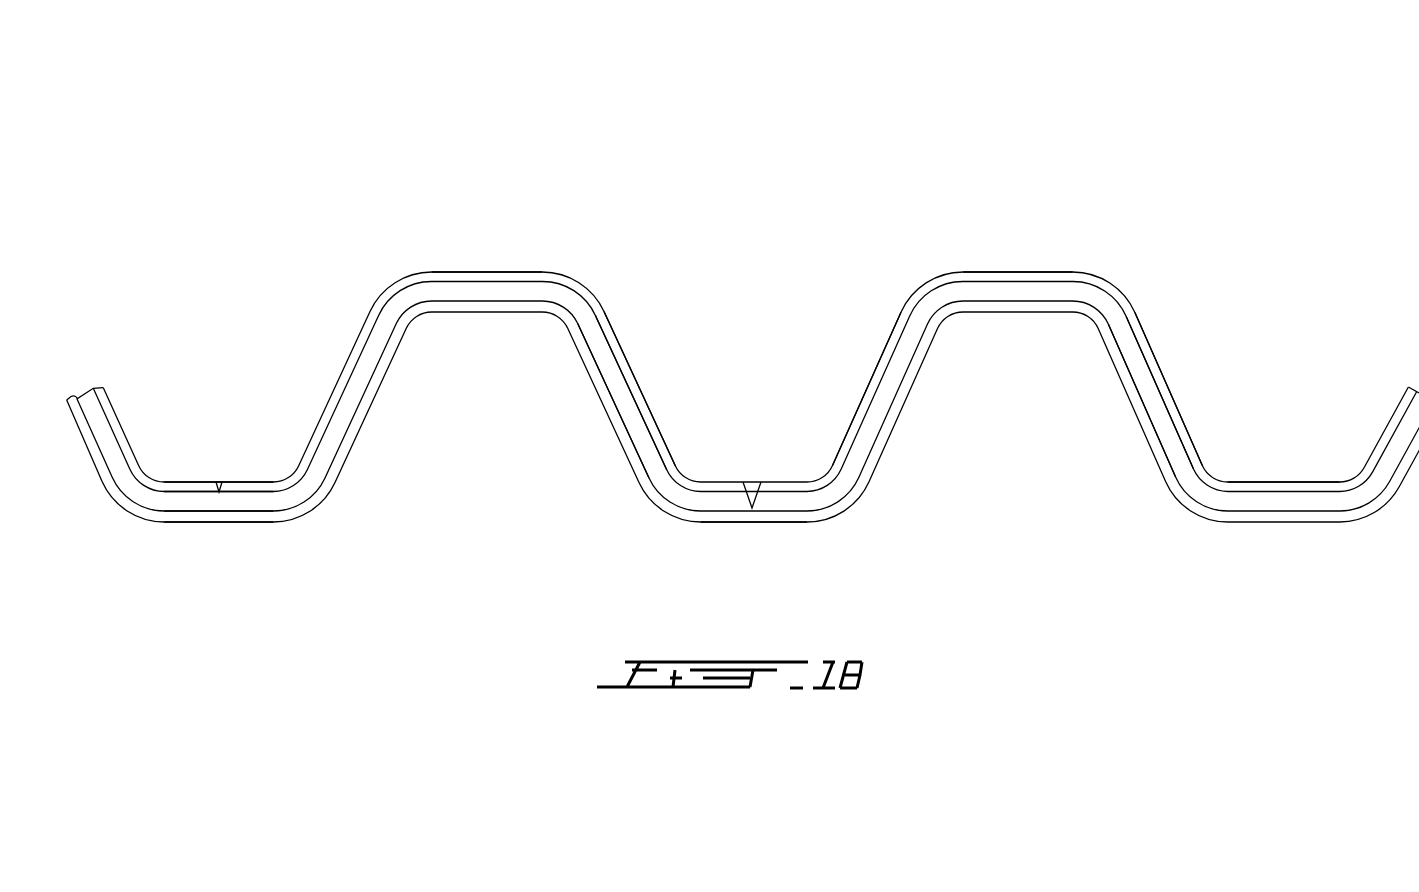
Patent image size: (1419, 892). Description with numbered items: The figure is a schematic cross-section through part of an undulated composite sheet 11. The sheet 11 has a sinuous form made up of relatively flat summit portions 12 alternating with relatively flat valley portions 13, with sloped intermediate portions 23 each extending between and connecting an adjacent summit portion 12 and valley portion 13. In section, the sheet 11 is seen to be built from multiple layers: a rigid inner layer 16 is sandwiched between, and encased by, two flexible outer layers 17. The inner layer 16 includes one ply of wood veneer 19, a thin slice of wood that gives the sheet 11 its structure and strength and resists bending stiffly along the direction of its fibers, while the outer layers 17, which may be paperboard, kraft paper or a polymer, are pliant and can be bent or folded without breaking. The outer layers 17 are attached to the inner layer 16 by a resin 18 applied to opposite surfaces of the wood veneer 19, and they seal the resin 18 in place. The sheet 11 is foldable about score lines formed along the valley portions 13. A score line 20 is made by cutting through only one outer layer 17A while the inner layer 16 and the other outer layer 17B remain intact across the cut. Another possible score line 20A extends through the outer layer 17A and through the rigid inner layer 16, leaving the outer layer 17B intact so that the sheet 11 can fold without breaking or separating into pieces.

The sheet 11 is at (281, 228).
The summit portions 12 is at (484, 272).
The valley portions 13 is at (246, 482).
The rigid inner layer 16 is at (282, 497).
The flexible outer layers 17 is at (167, 482).
The outer layer 17A is at (658, 452).
The outer layer 17B is at (680, 512).
The resin 18 is at (1152, 354).
The wood veneer 19 is at (614, 383).
The score line 20 is at (218, 466).
The score line 20A is at (752, 462).
The intermediate portions 23 is at (895, 330).